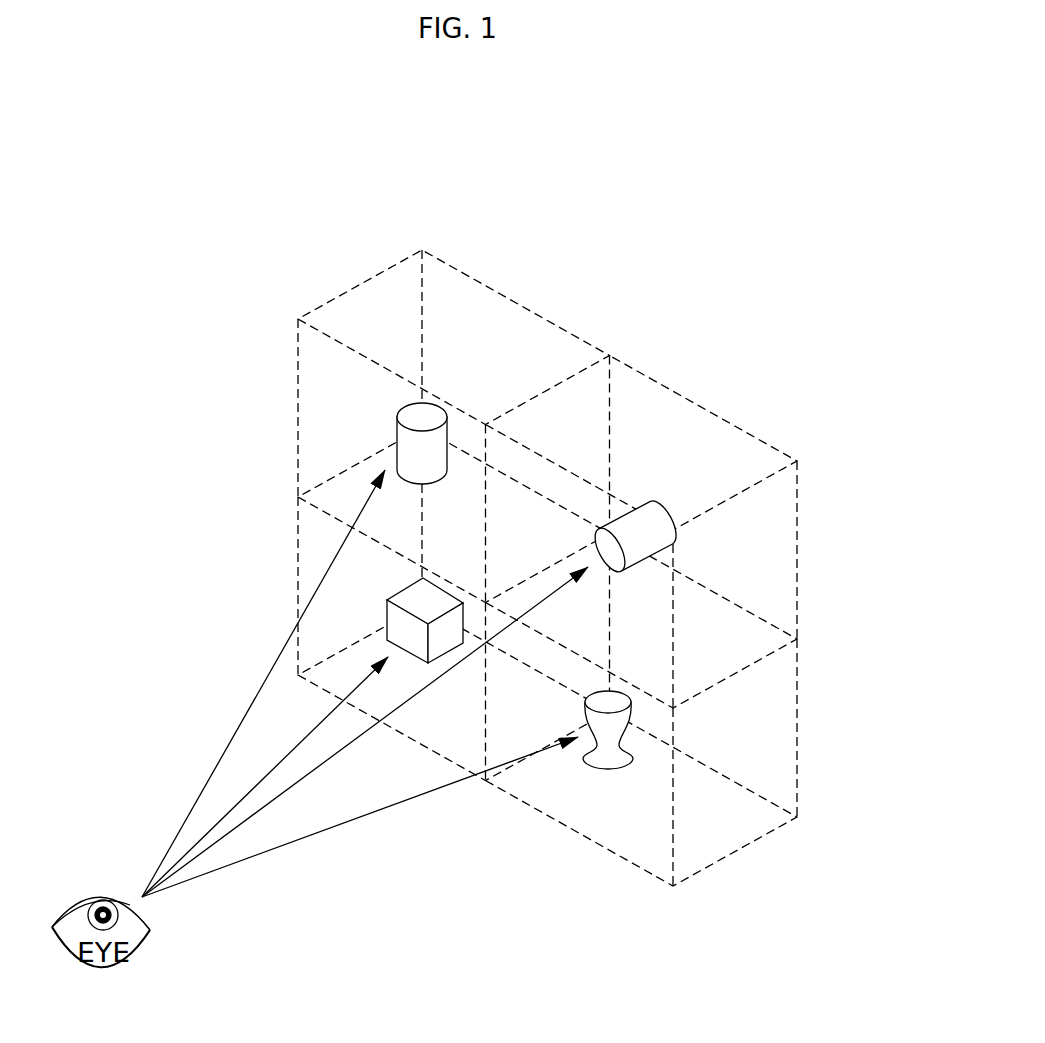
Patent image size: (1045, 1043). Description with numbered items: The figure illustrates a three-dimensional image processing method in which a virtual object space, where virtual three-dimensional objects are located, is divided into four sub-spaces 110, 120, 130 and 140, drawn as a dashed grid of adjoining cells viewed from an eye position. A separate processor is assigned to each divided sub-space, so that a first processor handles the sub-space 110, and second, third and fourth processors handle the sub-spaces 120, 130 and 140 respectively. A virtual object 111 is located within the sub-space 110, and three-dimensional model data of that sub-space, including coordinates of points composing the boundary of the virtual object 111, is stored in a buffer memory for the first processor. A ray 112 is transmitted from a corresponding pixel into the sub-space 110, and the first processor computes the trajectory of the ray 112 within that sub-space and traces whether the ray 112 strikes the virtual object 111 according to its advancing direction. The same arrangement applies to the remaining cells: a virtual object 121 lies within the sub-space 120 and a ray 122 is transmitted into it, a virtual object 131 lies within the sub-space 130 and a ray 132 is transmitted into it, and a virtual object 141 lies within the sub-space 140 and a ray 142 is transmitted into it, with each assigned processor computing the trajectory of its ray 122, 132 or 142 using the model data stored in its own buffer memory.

The sub-space 110 is at (510, 298).
The virtual object 111 is at (422, 417).
The ray 112 is at (177, 836).
The sub-space 120 is at (685, 400).
The virtual object 121 is at (645, 535).
The ray 122 is at (313, 771).
The sub-space 130 is at (297, 541).
The virtual object 131 is at (413, 600).
The ray 132 is at (237, 808).
The sub-space 140 is at (798, 740).
The virtual object 141 is at (608, 758).
The ray 142 is at (400, 803).